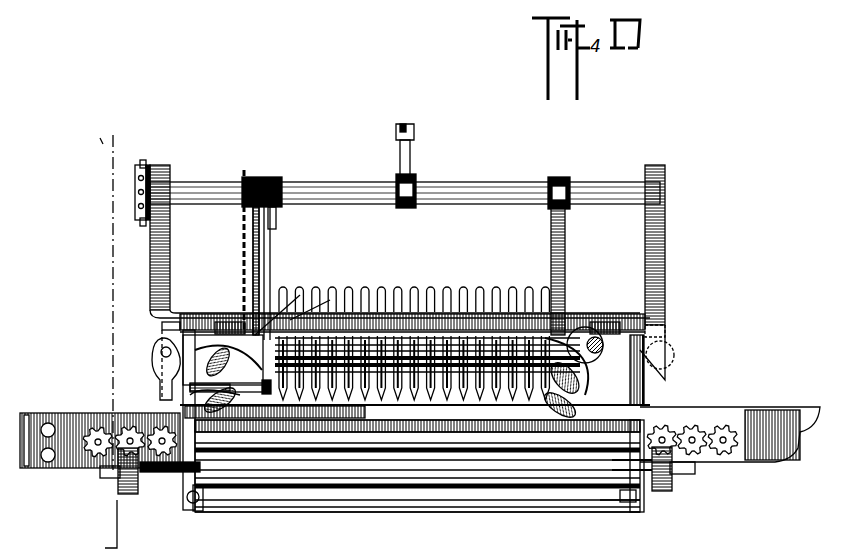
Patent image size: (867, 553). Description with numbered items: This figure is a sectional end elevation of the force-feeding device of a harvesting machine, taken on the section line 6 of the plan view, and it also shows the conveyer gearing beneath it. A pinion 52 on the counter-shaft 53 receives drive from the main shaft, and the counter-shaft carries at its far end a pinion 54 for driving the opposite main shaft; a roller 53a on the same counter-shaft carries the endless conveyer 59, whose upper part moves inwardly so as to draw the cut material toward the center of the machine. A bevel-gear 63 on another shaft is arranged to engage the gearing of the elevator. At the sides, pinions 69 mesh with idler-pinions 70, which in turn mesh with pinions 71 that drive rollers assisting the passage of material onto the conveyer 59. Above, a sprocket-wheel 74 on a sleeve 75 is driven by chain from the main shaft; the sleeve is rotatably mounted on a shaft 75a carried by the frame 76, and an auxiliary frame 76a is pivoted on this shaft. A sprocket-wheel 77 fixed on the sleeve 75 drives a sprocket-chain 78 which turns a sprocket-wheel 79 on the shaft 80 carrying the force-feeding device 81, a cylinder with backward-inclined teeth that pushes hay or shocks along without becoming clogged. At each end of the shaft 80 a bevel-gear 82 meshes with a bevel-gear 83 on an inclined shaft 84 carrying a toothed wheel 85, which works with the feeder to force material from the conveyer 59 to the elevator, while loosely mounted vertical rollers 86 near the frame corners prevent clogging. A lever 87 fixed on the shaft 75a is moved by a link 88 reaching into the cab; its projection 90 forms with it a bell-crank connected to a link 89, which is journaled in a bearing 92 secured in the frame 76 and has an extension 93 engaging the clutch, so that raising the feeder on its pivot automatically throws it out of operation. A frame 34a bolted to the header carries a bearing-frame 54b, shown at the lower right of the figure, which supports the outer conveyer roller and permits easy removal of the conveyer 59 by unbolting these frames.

The section line 6 is at (101, 525).
The frame 34a is at (208, 508).
The pinion 52 is at (130, 495).
The counter-shaft 53 is at (170, 475).
The roller 53a is at (308, 488).
The pinion 54 is at (675, 487).
The bearing 54b is at (640, 505).
The endless conveyer 59 is at (585, 498).
The bevel-gear 63 is at (560, 515).
The pinion 69 is at (95, 428).
The idler-pinion 70 is at (125, 428).
The pinion 71 is at (158, 428).
The sprocket-wheel 74 is at (142, 162).
The sleeve 75 is at (190, 182).
The shaft 75a is at (342, 186).
The frame 76 is at (158, 278).
The auxiliary frame 76a is at (272, 270).
The sprocket-wheel 77 is at (250, 175).
The sprocket-chain 78 is at (240, 262).
The sprocket-wheel 79 is at (315, 300).
The shaft 80 is at (578, 332).
The force-feeding device 81 is at (440, 300).
The bevel-gear 82 is at (232, 330).
The bevel-gear 83 is at (638, 342).
The inclined shaft 84 is at (272, 393).
The toothed wheel 85 is at (575, 395).
The roller 86 is at (168, 336).
The lever 87 is at (412, 155).
The link 88 is at (415, 128).
The link 89 is at (278, 309).
The projection 90 is at (278, 220).
The bearing 92 is at (158, 372).
The extension 93 is at (150, 475).